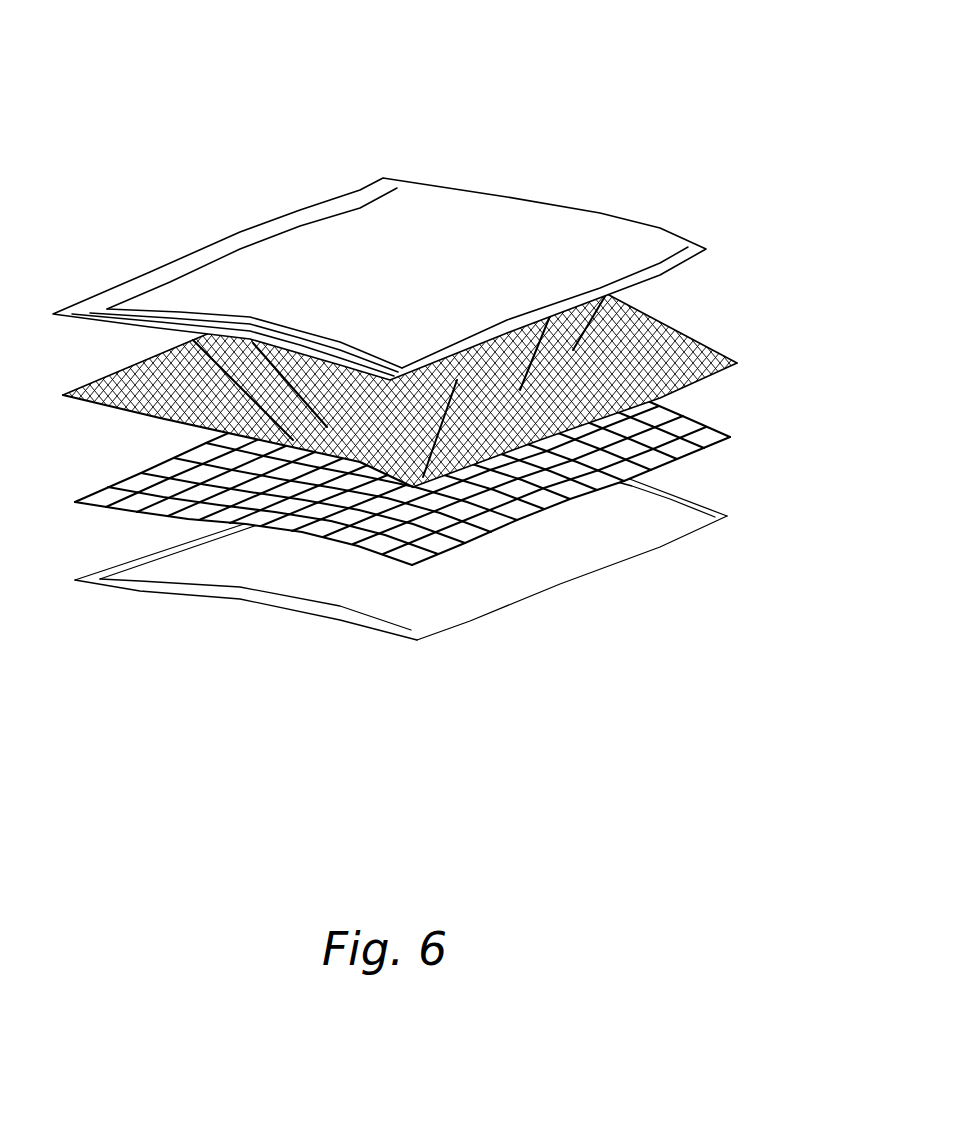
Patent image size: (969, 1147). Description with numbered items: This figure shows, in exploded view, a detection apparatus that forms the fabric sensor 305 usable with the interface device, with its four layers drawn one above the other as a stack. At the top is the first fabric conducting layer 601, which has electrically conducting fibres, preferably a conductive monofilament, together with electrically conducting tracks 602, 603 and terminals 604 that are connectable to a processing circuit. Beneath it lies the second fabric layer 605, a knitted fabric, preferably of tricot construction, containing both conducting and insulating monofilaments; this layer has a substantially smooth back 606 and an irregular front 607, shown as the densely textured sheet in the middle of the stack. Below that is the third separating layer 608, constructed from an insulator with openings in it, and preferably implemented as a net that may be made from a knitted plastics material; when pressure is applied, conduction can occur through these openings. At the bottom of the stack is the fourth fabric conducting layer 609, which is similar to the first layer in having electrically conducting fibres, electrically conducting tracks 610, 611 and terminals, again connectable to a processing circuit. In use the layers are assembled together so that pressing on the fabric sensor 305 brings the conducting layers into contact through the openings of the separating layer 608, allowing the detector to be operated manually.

The fabric sensor 305 is at (389, 125).
The first fabric conducting layer 601 is at (416, 241).
The electrically conducting track 602 is at (255, 245).
The electrically conducting track 603 is at (647, 263).
The terminals 604 is at (416, 241).
The second fabric layer 605 is at (657, 317).
The smooth back 606 is at (445, 356).
The irregular front 607 is at (436, 356).
The third separating layer 608 is at (703, 446).
The fourth fabric conducting layer 609 is at (401, 591).
The electrically conducting track 610 is at (697, 511).
The electrically conducting track 611 is at (393, 627).